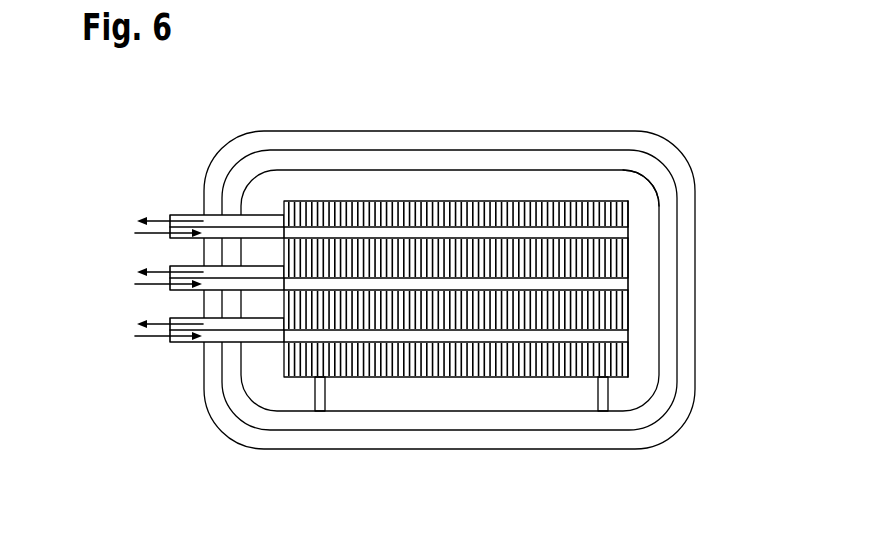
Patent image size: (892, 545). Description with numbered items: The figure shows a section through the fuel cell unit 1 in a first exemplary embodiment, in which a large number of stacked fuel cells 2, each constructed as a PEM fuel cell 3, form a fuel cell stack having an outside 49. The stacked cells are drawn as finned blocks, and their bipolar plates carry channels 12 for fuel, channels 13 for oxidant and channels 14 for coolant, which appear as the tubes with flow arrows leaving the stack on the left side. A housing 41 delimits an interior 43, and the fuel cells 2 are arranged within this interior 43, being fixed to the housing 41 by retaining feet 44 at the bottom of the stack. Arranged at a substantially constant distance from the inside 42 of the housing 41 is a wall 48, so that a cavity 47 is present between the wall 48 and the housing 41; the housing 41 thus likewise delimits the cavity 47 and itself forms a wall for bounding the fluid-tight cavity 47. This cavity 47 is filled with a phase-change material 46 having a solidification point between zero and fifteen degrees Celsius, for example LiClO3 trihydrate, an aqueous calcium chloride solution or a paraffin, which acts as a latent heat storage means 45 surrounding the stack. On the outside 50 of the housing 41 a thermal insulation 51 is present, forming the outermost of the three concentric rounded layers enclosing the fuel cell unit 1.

The fuel cell unit 1 is at (443, 294).
The fuel cell 2 is at (456, 153).
The PEM fuel cell 3 is at (432, 207).
The channels for fuel 12 is at (188, 265).
The channels for oxidant 13 is at (177, 214).
The channels for coolant 14 is at (180, 345).
The housing 41 is at (498, 245).
The inside of the housing 42 is at (333, 180).
The interior 43 is at (645, 184).
The retaining feet 44 is at (326, 393).
The latent heat storage means 45 is at (486, 320).
The phase-change material 46 is at (505, 294).
The cavity 47 is at (449, 329).
The wall 48 is at (498, 245).
The outside of the fuel cell stack 49 is at (520, 228).
The outside of the housing 50 is at (530, 433).
The thermal insulation 51 is at (651, 440).